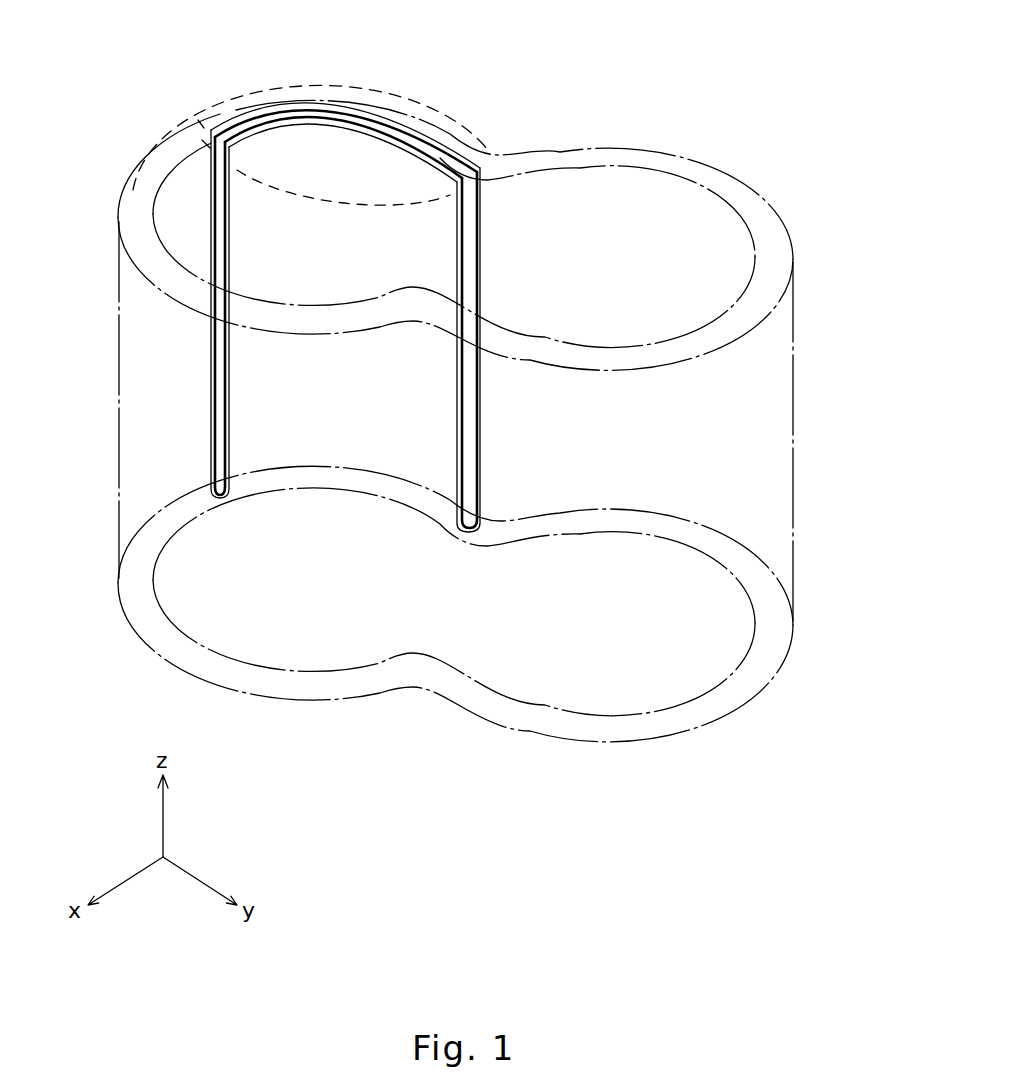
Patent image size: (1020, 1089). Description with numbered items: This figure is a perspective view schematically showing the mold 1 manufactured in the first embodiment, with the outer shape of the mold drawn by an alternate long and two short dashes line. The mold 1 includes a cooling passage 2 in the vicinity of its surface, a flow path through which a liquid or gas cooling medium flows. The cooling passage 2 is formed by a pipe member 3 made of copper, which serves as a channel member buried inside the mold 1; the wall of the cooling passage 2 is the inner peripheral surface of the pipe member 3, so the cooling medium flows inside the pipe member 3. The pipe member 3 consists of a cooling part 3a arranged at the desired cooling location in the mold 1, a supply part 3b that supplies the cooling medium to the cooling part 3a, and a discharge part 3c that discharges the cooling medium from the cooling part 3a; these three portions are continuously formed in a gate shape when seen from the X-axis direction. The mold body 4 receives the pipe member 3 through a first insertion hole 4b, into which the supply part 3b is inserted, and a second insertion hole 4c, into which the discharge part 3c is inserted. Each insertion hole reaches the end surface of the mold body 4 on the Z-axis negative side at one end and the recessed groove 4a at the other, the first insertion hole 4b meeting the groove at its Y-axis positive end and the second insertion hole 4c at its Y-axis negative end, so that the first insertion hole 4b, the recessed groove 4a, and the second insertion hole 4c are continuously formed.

The mold 1 is at (621, 34).
The cooling passage 2 is at (393, 117).
The pipe member 3 is at (358, 120).
The cooling part 3a is at (432, 150).
The supply part 3b is at (477, 287).
The discharge part 3c is at (218, 232).
The mold body 4 is at (802, 443).
The recessed groove 4a is at (417, 127).
The first insertion hole 4b is at (482, 393).
The second insertion hole 4c is at (215, 345).